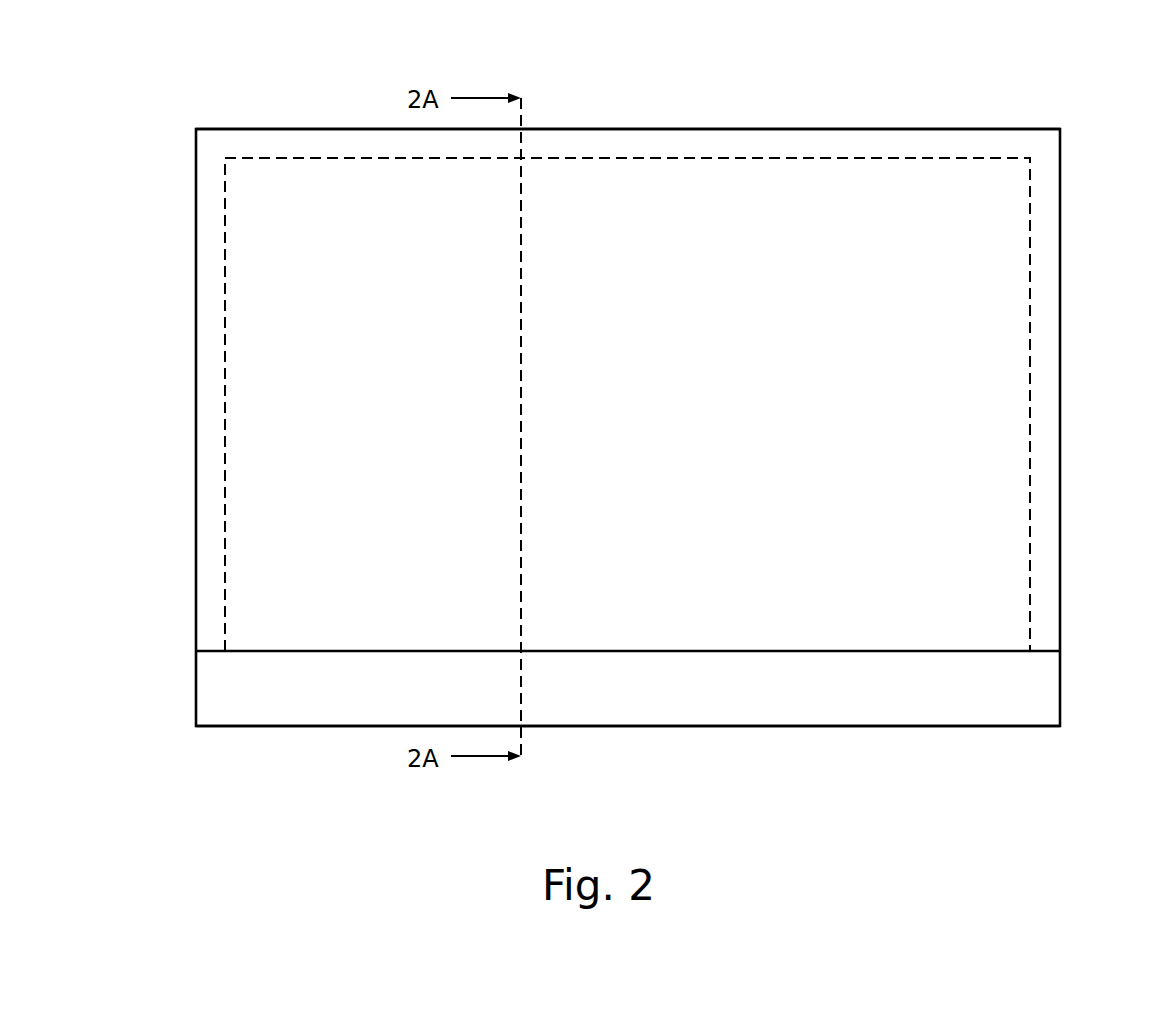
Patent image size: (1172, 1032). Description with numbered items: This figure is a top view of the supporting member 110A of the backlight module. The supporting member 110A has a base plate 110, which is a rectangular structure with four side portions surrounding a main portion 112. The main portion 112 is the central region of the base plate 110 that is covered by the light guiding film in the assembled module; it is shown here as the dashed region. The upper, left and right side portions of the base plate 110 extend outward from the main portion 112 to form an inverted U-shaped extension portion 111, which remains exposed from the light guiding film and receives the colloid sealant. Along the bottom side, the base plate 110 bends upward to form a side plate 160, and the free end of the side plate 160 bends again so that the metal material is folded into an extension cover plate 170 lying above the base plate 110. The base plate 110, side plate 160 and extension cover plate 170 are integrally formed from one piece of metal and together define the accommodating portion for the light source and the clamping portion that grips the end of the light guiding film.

The base plate 110 is at (192, 312).
The supporting member 110A is at (1148, 63).
The extension portion 111 is at (765, 145).
The main portion 112 is at (1016, 398).
The side plate 160 is at (912, 727).
The extension cover plate 170 is at (1033, 692).